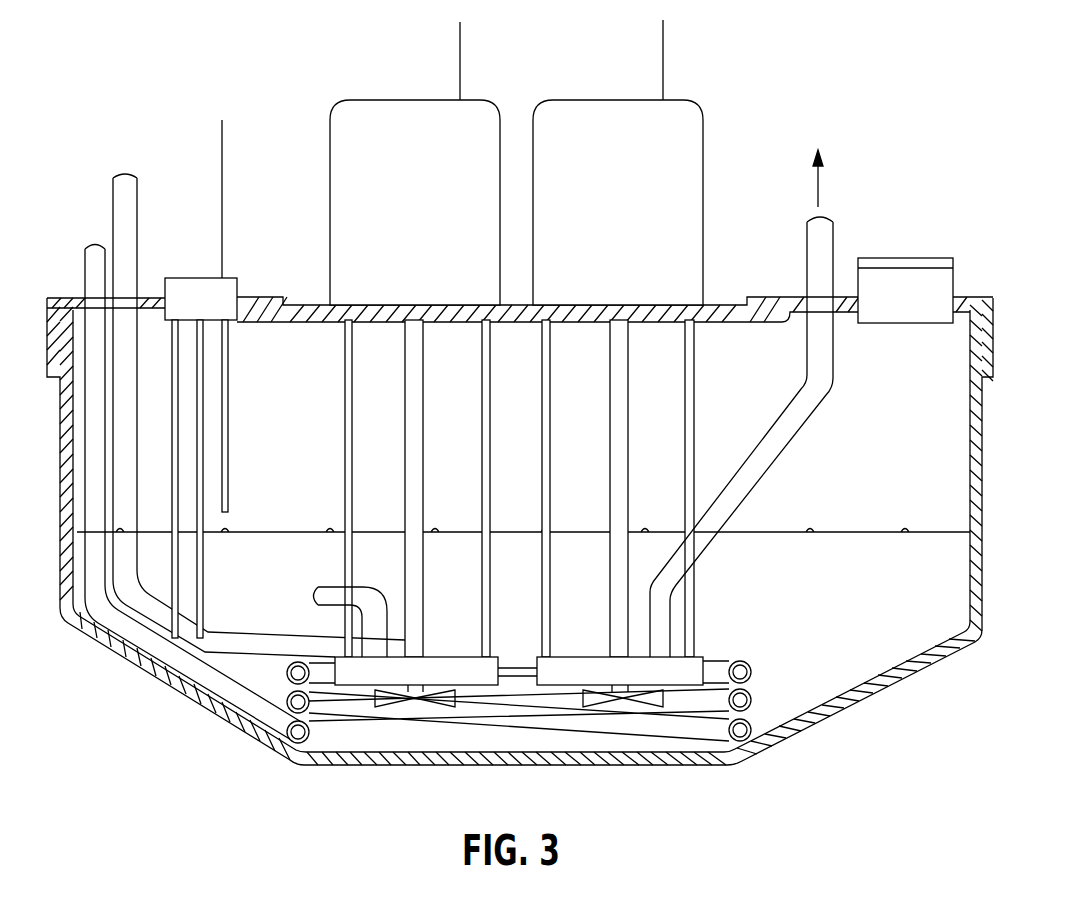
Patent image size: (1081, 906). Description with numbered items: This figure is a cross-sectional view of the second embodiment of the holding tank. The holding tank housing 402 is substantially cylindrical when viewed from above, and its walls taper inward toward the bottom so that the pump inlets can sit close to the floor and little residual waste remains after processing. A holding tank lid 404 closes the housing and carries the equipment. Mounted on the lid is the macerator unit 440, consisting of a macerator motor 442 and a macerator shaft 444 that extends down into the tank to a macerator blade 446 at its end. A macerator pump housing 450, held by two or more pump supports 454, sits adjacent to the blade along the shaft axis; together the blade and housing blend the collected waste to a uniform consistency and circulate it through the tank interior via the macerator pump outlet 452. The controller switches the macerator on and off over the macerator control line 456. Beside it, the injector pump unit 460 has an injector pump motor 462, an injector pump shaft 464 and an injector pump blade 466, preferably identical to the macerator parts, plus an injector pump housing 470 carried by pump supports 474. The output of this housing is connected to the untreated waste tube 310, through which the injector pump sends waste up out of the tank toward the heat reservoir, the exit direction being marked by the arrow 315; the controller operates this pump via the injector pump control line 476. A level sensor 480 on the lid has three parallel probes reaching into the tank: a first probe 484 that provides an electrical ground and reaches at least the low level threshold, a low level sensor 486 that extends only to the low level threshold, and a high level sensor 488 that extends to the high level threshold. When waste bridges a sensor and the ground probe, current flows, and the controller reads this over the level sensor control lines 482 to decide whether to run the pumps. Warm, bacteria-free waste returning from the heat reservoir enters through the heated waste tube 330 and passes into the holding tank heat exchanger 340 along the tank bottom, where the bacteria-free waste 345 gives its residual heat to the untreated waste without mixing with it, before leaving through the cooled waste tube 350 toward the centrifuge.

The untreated waste tube 310 is at (822, 408).
The outlet flow arrow 315 is at (842, 180).
The heated waste tube 330 is at (113, 203).
The holding tank heat exchanger 340 is at (752, 672).
The bacteria-free waste 345 is at (752, 735).
The cooled waste tube 350 is at (88, 268).
The holding tank housing 402 is at (975, 565).
The holding tank lid 404 is at (772, 297).
The macerator unit 440 is at (382, 339).
The macerator motor 442 is at (446, 229).
The macerator shaft 444 is at (414, 372).
The macerator blade 446 is at (385, 705).
The macerator pump housing 450 is at (450, 660).
The macerator pump outlet 452 is at (318, 597).
The pump supports 454 is at (482, 406).
The macerator control line 456 is at (460, 45).
The injector pump unit 460 is at (605, 330).
The injector pump motor 462 is at (646, 229).
The injector pump shaft 464 is at (628, 385).
The injector pump blade 466 is at (595, 705).
The injector pump housing 470 is at (585, 660).
The pump supports 474 is at (685, 408).
The injector pump control line 476 is at (663, 56).
The level sensor 480 is at (192, 278).
The level sensor control lines 482 is at (222, 142).
The first probe 484 is at (178, 492).
The low level sensor 486 is at (203, 440).
The high level sensor 488 is at (230, 386).